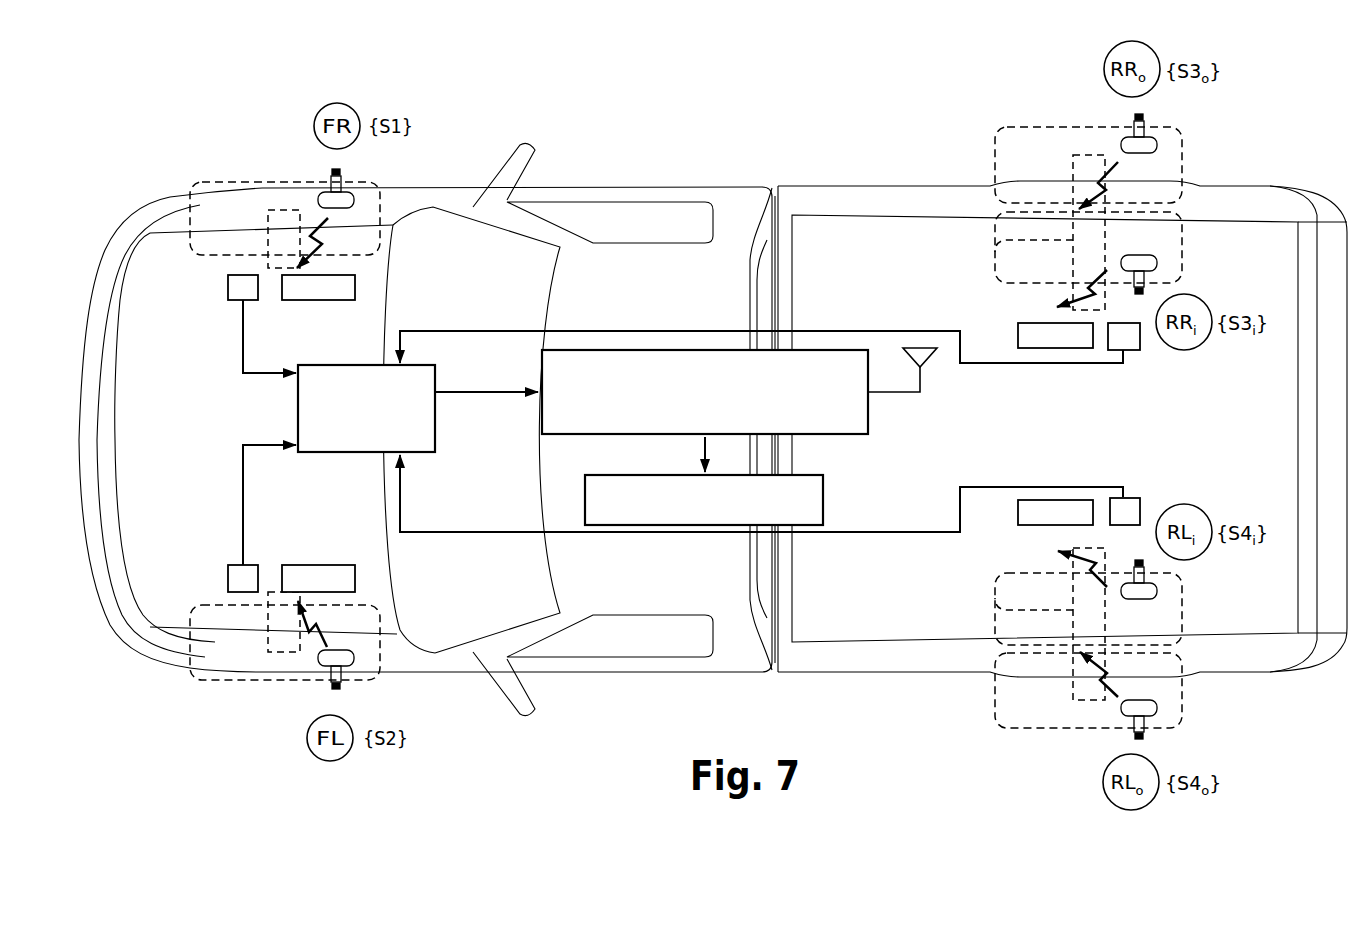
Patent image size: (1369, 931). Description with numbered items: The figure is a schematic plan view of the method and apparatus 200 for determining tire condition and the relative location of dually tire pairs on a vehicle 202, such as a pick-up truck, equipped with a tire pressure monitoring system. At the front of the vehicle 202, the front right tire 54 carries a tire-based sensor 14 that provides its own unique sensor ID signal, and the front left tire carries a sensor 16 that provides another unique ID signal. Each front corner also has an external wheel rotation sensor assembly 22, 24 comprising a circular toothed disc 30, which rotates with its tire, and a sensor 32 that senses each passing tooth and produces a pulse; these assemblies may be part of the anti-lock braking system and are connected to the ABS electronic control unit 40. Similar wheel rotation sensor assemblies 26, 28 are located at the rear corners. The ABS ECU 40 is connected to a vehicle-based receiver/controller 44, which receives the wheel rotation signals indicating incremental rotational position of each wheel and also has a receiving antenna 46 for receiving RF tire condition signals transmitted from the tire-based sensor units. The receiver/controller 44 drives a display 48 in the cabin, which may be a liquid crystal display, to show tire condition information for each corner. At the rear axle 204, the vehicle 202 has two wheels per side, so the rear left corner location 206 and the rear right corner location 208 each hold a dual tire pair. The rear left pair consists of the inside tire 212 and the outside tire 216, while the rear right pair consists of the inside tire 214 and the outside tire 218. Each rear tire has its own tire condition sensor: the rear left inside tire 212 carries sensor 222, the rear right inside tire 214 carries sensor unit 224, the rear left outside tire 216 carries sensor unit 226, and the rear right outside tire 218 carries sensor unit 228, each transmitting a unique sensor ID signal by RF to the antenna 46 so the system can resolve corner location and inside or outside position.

The sensor 14 is at (331, 180).
The sensor 16 is at (328, 655).
The wheel rotation sensor assembly 22 is at (231, 190).
The wheel rotation sensor assembly 24 is at (203, 596).
The wheel rotation sensor assembly 26 is at (1141, 382).
The wheel rotation sensor assembly 28 is at (1149, 480).
The toothed disc 30 is at (300, 302).
The sensor 32 is at (228, 289).
The ABS electronic control unit 40 is at (298, 398).
The vehicle-based receiver/controller 44 is at (870, 412).
The receiving antenna 46 is at (929, 358).
The display 48 is at (825, 503).
The tire 54 is at (372, 182).
The method and apparatus 200 is at (1249, 81).
The vehicle 202 is at (1259, 187).
The rear axle 204 is at (1005, 242).
The rear left corner location 206 is at (962, 697).
The rear right corner location 208 is at (972, 143).
The inside tire 212 is at (1183, 617).
The inside tire 214 is at (1185, 238).
The outside tire 216 is at (1185, 678).
The outside tire 218 is at (1182, 160).
The tire condition sensor 222 is at (1152, 588).
The tire condition sensor unit 224 is at (1152, 263).
The tire condition sensor unit 226 is at (1152, 708).
The tire condition sensor unit 228 is at (1122, 130).